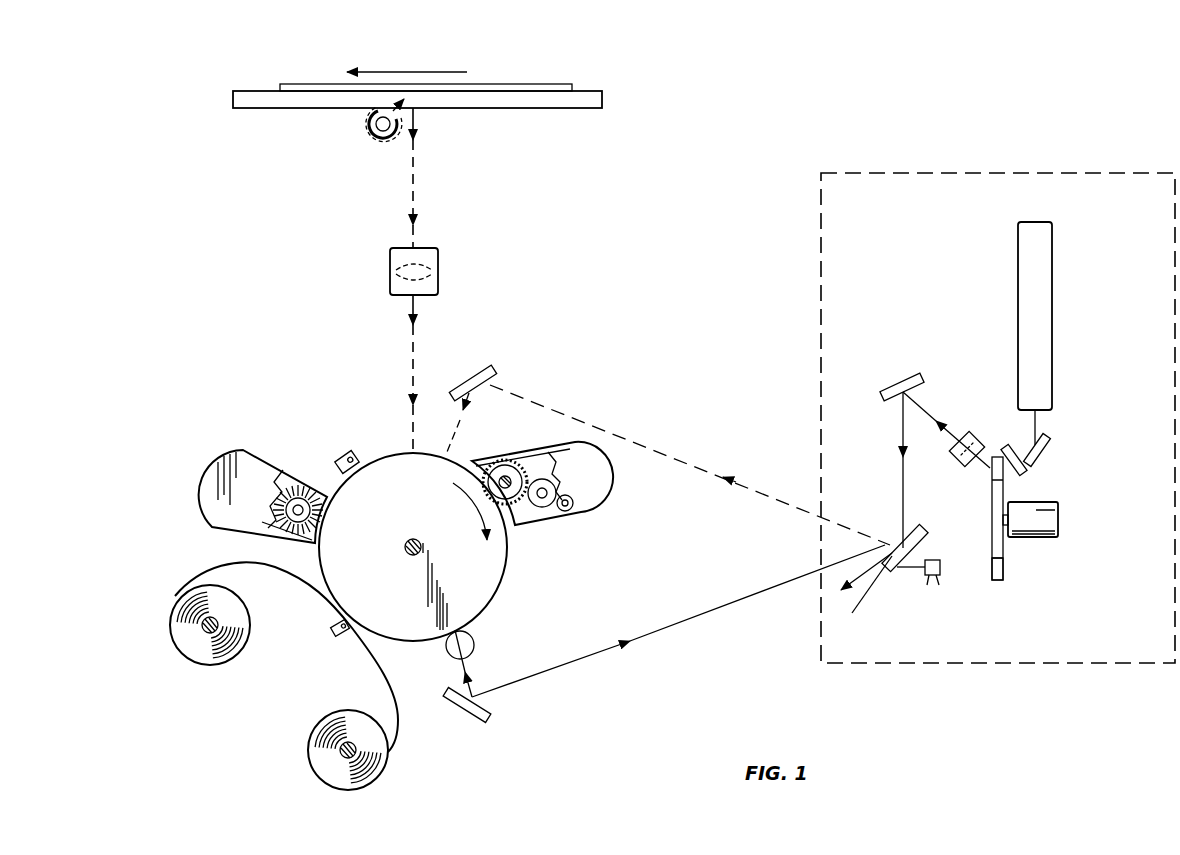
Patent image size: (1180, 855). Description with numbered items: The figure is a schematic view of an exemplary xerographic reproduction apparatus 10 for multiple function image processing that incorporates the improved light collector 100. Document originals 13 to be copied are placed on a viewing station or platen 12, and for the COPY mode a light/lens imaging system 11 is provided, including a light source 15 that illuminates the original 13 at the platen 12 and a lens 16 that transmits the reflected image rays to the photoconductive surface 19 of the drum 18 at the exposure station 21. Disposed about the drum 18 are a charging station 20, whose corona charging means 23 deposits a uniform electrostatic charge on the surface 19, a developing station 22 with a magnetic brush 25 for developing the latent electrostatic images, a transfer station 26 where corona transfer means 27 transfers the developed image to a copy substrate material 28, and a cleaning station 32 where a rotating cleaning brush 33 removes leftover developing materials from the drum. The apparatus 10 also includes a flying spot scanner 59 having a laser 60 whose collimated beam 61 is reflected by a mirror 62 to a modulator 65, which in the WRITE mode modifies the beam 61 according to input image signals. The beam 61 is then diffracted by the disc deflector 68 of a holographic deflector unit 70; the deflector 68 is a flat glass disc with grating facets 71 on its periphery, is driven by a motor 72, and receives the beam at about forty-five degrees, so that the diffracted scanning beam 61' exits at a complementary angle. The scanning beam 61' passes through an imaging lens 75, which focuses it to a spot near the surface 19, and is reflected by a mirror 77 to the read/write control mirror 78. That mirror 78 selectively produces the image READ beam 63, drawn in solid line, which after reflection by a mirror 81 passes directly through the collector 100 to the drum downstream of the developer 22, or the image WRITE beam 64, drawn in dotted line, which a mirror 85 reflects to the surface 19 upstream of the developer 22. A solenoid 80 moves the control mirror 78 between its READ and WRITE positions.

The xerographic reproduction apparatus 10 is at (490, 300).
The light/lens imaging system 11 is at (434, 193).
The platen 12 is at (602, 93).
The document original 13 is at (570, 84).
The light source 15 is at (376, 140).
The lens 16 is at (440, 264).
The drum 18 is at (395, 450).
The photoconductive surface 19 is at (508, 570).
The charging station 20 is at (372, 456).
The exposure station 21 is at (432, 432).
The developing station 22 is at (601, 520).
The corona charging means 23 is at (343, 456).
The magnetic brush 25 is at (503, 466).
The transfer station 26 is at (318, 622).
The corona transfer means 27 is at (342, 640).
The copy substrate material 28 is at (400, 740).
The cleaning station 32 is at (310, 548).
The rotating cleaning brush 33 is at (268, 506).
The flying spot scanner 59 is at (1052, 165).
The laser 60 is at (1052, 266).
The collimated beam 61 is at (1065, 424).
The scanning beam 61' is at (877, 470).
The mirror 62 is at (1050, 446).
The image READ beam 63 is at (750, 600).
The image WRITE beam 64 is at (652, 440).
The modulator 65 is at (1030, 468).
The disc deflector 68 is at (1005, 560).
The holographic deflector unit 70 is at (1073, 527).
The facets 71 is at (1003, 580).
The motor 72 is at (1060, 506).
The imaging lens 75 is at (972, 436).
The mirror 77 is at (912, 381).
The read/write control mirror 78 is at (925, 544).
The solenoid 80 is at (938, 578).
The mirror 81 is at (490, 712).
The mirror 85 is at (490, 370).
The collector 100 is at (490, 642).